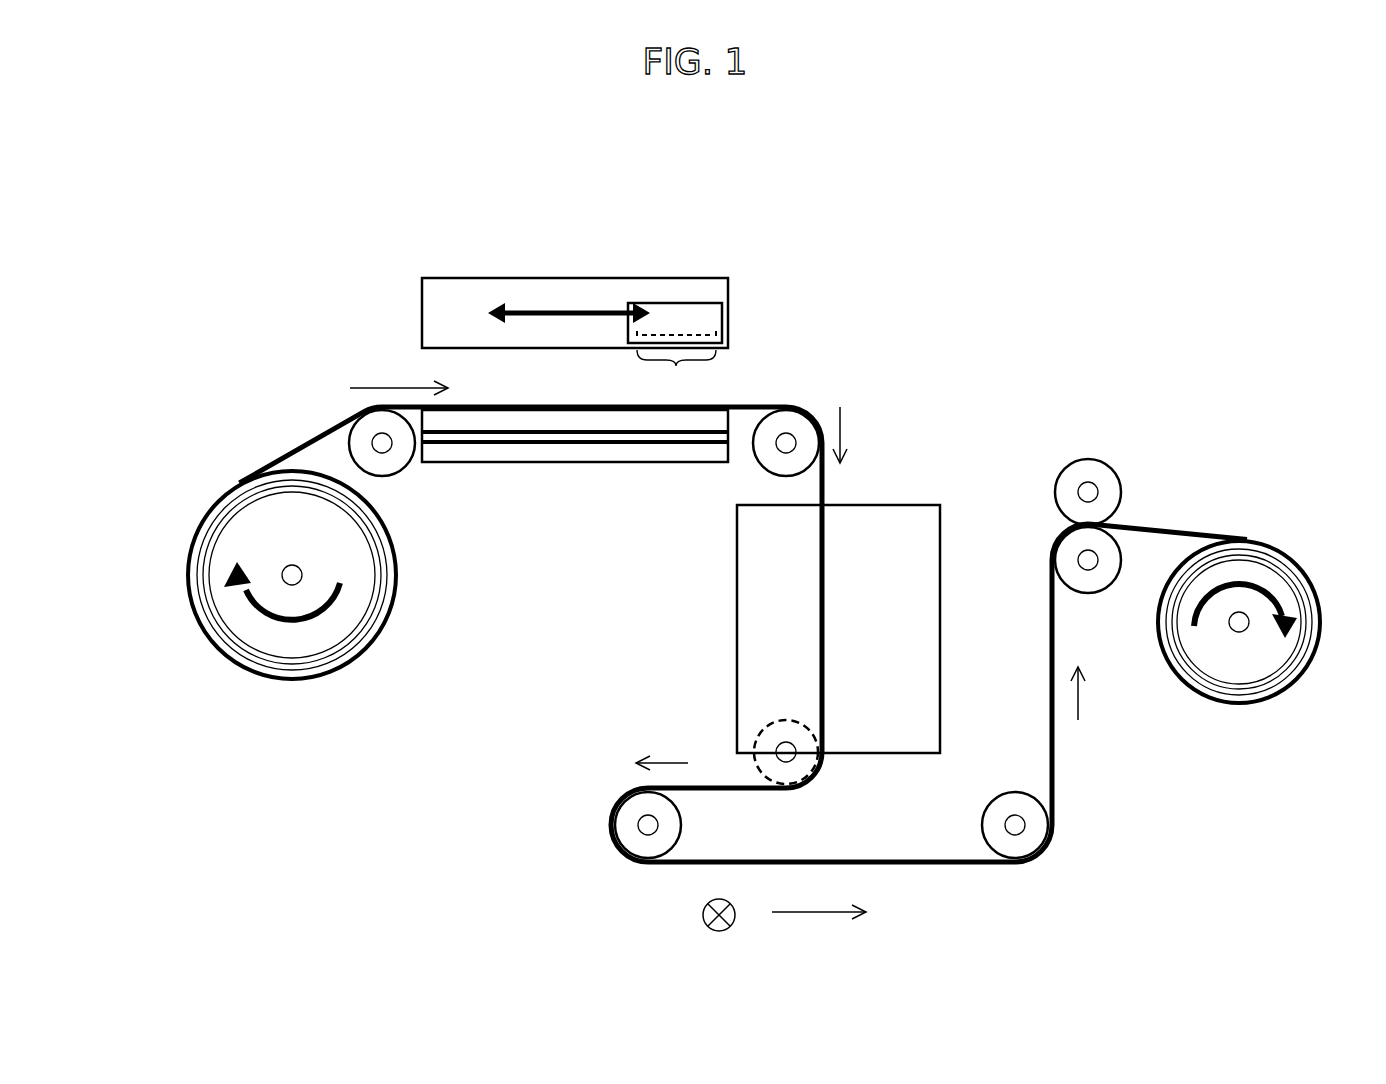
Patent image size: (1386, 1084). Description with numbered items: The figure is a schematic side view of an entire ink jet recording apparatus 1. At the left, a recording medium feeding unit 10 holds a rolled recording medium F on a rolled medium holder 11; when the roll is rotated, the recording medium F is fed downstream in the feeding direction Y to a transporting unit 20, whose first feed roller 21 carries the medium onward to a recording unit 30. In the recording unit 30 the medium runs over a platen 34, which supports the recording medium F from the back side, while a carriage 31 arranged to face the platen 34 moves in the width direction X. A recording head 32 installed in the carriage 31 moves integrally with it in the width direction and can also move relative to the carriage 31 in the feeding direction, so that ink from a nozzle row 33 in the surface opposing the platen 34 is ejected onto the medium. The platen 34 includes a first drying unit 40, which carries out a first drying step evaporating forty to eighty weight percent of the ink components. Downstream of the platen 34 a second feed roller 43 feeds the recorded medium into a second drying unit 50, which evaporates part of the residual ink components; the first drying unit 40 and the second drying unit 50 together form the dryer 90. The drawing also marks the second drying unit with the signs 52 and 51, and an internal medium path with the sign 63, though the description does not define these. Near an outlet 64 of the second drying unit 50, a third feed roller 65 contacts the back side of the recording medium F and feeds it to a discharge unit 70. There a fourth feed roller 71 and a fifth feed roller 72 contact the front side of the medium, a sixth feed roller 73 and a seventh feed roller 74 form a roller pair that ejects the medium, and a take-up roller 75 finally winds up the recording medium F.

The ink jet recording apparatus 1 is at (186, 230).
The recording medium feeding unit 10 is at (292, 651).
The rolled medium holder 11 is at (323, 598).
The transporting unit 20 is at (421, 464).
The first feed roller 21 is at (394, 460).
The recording unit 30 is at (575, 275).
The carriage 31 is at (537, 300).
The recording head 32 is at (677, 311).
The nozzle row 33 is at (676, 362).
The platen 34 is at (625, 441).
The first drying unit 40 is at (575, 497).
The second feed roller 43 is at (773, 456).
The second drying unit 50 is at (758, 633).
The drying chamber 51 is at (758, 633).
The drying device 52 is at (758, 633).
The medium path in drying unit 63 is at (828, 505).
The outlet 64 is at (828, 758).
The third feed roller 65 is at (780, 780).
The discharge unit 70 is at (967, 666).
The fourth feed roller 71 is at (672, 823).
The fifth feed roller 72 is at (998, 828).
The sixth feed roller 73 is at (1091, 584).
The seventh feed roller 74 is at (1084, 467).
The take-up roller 75 is at (1208, 622).
The dryer 90 is at (681, 603).
The rolled recording medium F is at (313, 420).